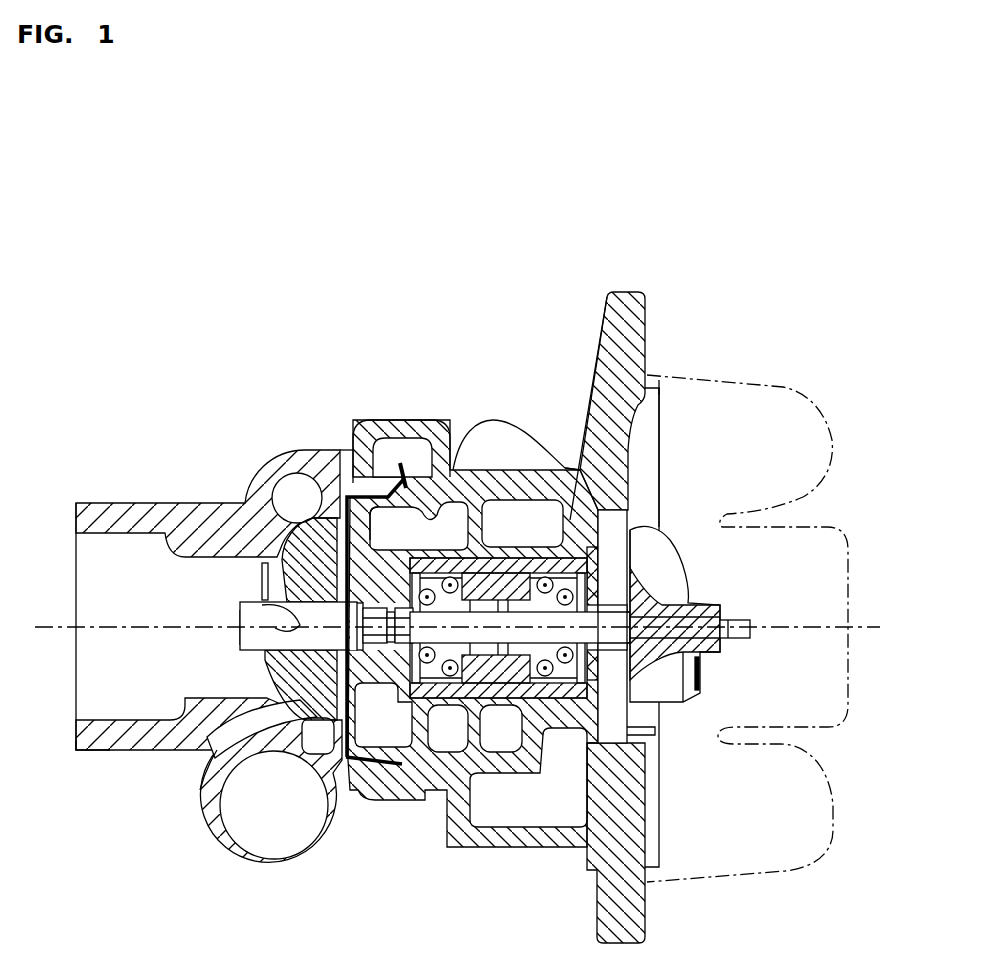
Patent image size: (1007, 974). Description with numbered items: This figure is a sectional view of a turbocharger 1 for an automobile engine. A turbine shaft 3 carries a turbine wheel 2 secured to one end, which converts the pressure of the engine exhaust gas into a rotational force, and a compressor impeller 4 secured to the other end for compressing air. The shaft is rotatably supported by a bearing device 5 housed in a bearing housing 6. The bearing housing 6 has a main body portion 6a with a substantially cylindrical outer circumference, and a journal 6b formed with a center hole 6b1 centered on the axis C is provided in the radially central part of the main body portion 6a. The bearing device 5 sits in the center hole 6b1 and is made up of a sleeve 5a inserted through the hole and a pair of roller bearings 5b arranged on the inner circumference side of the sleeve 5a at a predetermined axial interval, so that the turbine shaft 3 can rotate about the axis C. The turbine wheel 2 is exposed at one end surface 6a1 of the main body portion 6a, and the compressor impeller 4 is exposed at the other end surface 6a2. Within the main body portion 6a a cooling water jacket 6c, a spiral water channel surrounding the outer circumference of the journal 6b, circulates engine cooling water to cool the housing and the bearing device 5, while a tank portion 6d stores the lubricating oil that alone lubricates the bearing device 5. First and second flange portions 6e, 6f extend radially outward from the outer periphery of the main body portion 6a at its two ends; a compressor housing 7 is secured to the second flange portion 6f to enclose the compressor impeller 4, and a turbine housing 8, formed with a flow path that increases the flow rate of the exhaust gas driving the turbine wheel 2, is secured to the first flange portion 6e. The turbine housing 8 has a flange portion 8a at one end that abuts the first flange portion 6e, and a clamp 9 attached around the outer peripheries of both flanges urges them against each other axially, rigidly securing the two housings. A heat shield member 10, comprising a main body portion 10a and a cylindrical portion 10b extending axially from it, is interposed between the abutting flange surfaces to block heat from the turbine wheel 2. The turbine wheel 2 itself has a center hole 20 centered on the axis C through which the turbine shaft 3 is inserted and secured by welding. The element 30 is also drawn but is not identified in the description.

The turbocharger 1 is at (445, 588).
The turbine wheel 2 is at (267, 548).
The turbine shaft 3 is at (533, 557).
The compressor impeller 4 is at (712, 601).
The bearing device 5 is at (550, 513).
The sleeve 5a is at (570, 540).
The roller bearings 5b is at (385, 723).
The bearing housing 6 is at (430, 614).
The main body portion 6a is at (416, 440).
The one end surface 6a1 is at (345, 497).
The another end surface 6a2 is at (572, 530).
The journal 6b is at (500, 743).
The center hole 6b1 is at (536, 735).
The cooling water jacket 6c is at (397, 533).
The tank portion 6d is at (586, 815).
The first flange portion 6e is at (421, 420).
The second flange portion 6f is at (623, 338).
The compressor housing 7 is at (783, 386).
The turbine housing 8 is at (205, 602).
The flange portion 8a is at (380, 445).
The clamp 9 is at (400, 425).
The heat shield member 10 is at (318, 768).
The main body portion 10a is at (203, 782).
The cylindrical portion 10b is at (130, 750).
The center hole 20 is at (246, 590).
The inlet contour 30 is at (242, 628).
The axis C is at (56, 624).